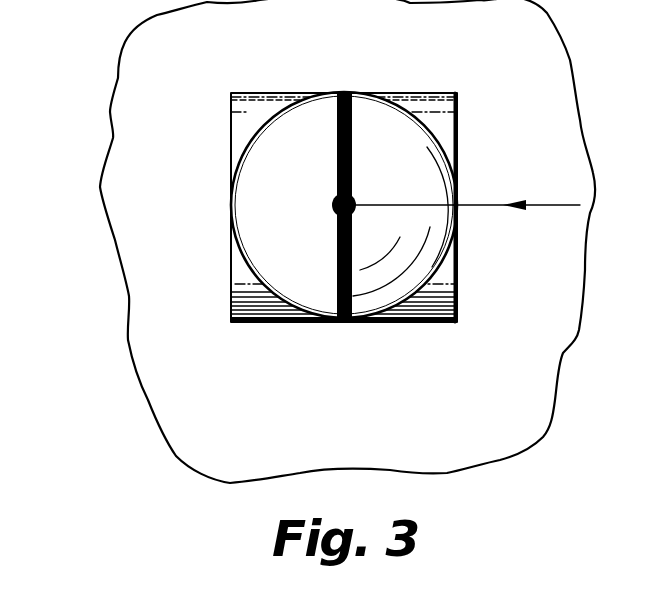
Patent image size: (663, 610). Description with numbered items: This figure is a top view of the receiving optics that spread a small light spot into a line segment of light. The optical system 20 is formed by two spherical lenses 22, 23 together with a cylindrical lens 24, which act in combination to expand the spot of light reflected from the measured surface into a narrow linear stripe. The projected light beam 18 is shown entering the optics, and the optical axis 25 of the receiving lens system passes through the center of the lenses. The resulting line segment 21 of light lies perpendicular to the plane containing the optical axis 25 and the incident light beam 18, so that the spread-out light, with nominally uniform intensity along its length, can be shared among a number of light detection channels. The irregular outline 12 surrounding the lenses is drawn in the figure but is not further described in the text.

The substrate 12 is at (128, 88).
The optical axis / light beam 18 is at (470, 206).
The lens assembly 20 is at (478, 293).
The vertical support bar 21 is at (342, 293).
The lens 22 is at (305, 205).
The lens surface 23 is at (266, 138).
The frame 24 is at (456, 126).
The center hub 25 is at (338, 209).